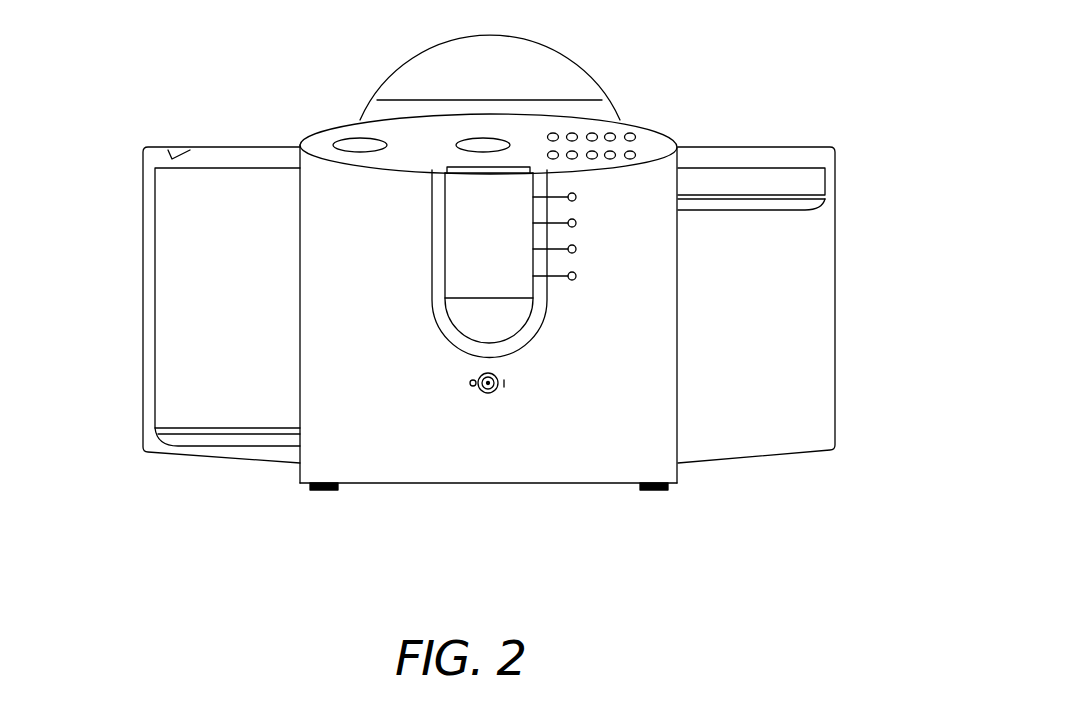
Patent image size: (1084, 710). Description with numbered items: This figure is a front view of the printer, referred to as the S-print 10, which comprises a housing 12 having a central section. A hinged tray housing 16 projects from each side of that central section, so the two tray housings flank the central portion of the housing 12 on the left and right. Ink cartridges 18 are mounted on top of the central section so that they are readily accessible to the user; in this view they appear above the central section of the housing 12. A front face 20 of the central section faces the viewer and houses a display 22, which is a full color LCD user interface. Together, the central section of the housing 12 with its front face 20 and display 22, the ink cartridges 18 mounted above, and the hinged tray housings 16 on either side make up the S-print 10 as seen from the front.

The S-print 10 is at (500, 318).
The housing 12 is at (700, 477).
The hinged tray housing 16 is at (185, 355).
The ink cartridges 18 is at (614, 50).
The front face 20 is at (360, 465).
The display 22 is at (535, 290).